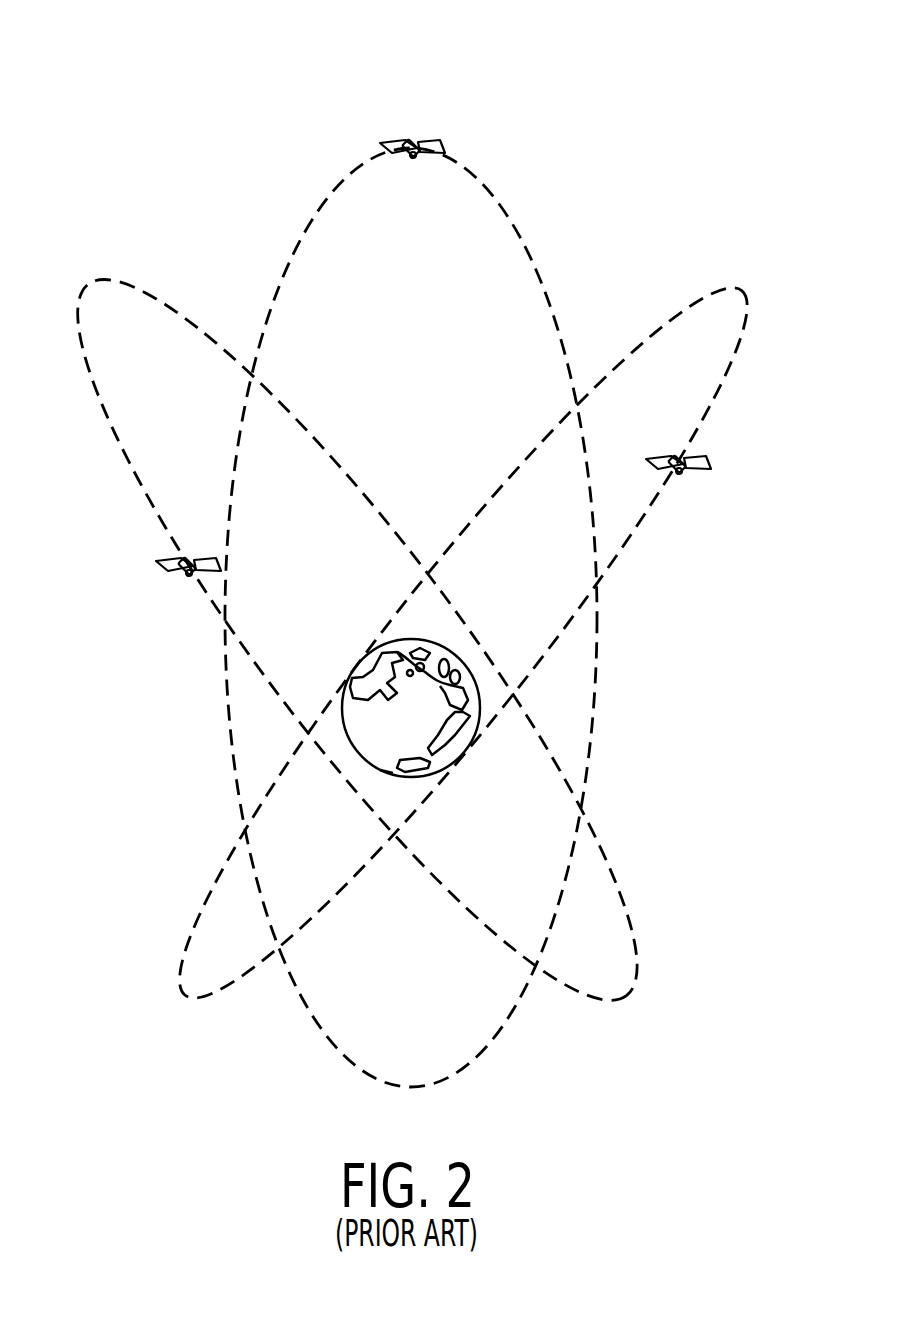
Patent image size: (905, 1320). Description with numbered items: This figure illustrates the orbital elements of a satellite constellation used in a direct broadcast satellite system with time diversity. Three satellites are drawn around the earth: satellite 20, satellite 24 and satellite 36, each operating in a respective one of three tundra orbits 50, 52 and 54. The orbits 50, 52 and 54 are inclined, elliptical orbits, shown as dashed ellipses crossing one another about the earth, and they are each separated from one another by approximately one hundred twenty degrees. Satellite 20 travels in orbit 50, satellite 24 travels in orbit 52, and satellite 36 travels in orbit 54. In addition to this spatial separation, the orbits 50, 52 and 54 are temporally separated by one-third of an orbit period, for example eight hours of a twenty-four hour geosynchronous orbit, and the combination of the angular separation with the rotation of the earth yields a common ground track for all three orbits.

The satellite 20 is at (430, 138).
The satellite 24 is at (188, 573).
The satellite 36 is at (682, 473).
The tundra orbit 50 is at (528, 244).
The tundra orbit 52 is at (279, 402).
The tundra orbit 54 is at (597, 585).